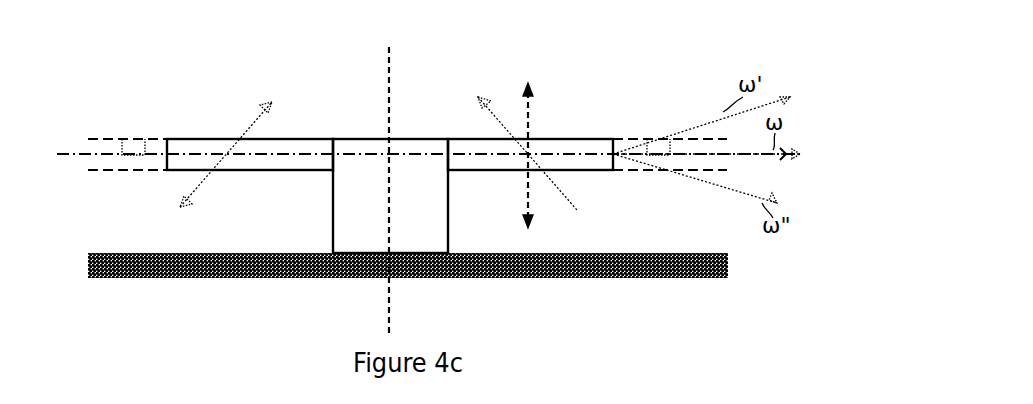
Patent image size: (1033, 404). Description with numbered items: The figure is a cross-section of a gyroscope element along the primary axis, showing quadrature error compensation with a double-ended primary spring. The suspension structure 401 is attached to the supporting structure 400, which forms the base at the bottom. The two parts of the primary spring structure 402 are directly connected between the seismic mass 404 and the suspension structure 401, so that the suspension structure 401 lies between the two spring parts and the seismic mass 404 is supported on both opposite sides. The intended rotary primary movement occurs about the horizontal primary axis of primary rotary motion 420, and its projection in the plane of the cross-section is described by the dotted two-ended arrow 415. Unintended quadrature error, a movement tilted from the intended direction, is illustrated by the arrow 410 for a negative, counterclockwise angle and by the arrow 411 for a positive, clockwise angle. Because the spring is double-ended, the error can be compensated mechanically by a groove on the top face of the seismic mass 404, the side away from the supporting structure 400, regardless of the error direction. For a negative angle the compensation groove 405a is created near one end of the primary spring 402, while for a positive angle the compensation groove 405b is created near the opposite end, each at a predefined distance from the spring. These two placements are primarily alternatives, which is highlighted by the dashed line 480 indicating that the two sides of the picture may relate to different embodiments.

The supporting structure 400 is at (730, 267).
The suspension structure 401 is at (448, 202).
The primary spring structure 402 is at (252, 170).
The seismic mass 404 is at (148, 170).
The compensation groove 405a is at (660, 137).
The compensation groove 405b is at (137, 137).
The quadrature error arrow 410 is at (490, 102).
The quadrature error arrow 411 is at (260, 117).
The primary rotation motion arrow 415 is at (533, 82).
The primary axis of primary rotary motion 420 is at (272, 155).
The dashed line 480 is at (389, 87).